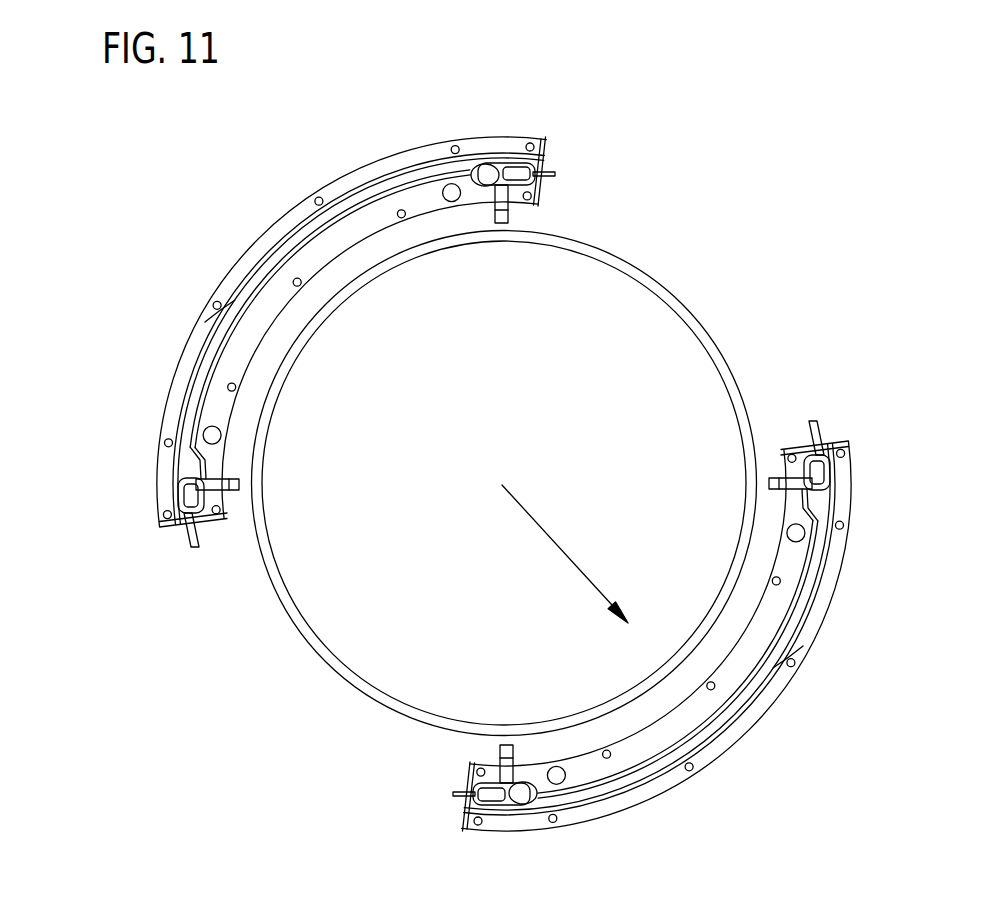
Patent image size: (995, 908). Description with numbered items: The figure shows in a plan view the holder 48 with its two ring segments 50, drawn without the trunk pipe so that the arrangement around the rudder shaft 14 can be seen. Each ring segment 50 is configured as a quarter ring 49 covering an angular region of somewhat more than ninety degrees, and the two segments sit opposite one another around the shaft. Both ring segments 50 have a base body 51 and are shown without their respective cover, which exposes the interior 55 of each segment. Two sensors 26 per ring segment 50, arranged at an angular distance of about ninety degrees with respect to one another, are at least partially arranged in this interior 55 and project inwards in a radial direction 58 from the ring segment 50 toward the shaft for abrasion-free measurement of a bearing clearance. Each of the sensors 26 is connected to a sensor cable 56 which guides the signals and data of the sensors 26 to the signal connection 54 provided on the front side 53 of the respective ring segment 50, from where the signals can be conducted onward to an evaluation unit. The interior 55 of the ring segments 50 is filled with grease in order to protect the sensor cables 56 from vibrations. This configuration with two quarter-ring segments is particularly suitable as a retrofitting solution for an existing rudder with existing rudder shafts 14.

The rudder shaft 14 is at (683, 304).
The sensor 26 is at (508, 201).
The holder 48 is at (163, 382).
The quarter ring 49 is at (253, 237).
The ring segment 50 is at (322, 183).
The base body 51 is at (392, 151).
The front side 53 is at (215, 532).
The signal connection 54 is at (187, 537).
The interior 55 is at (225, 334).
The sensor cable 56 is at (495, 163).
The radial direction 58 is at (549, 537).